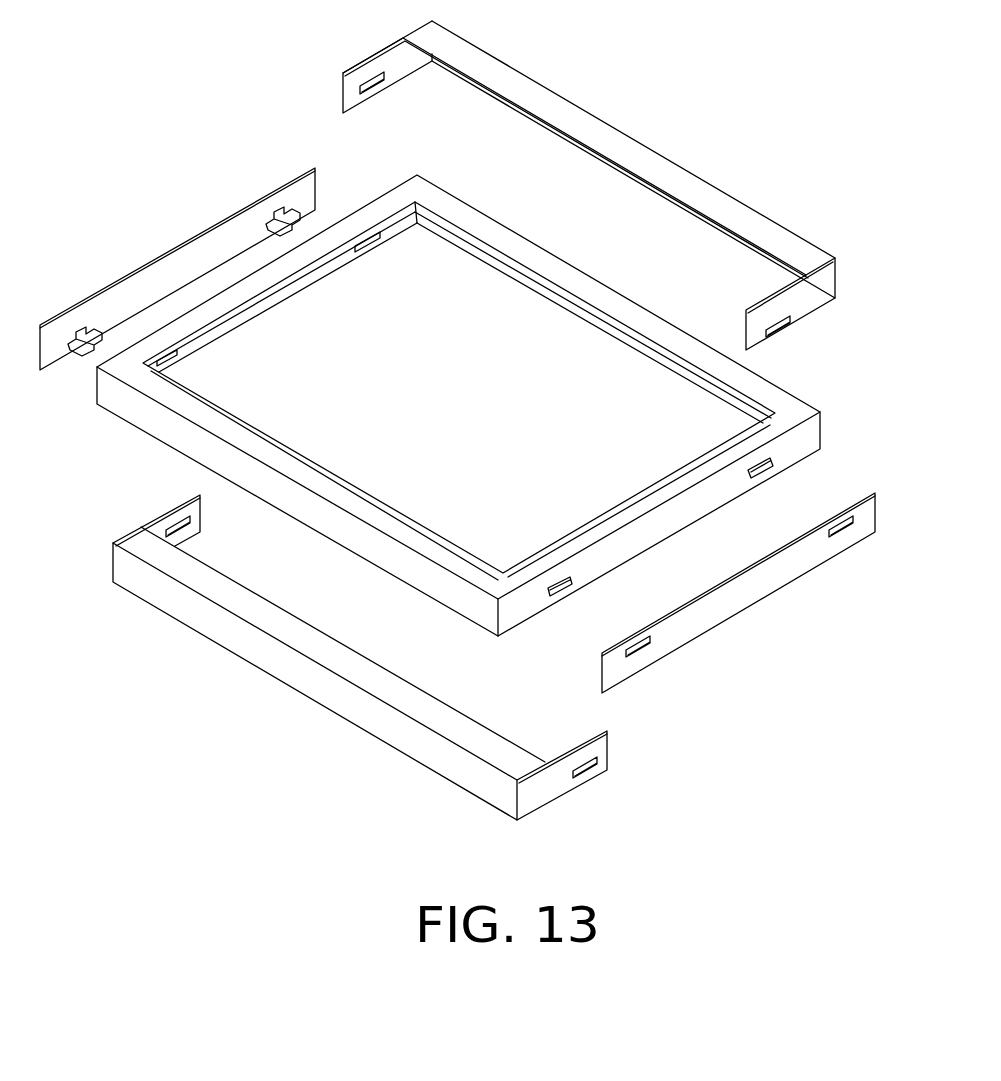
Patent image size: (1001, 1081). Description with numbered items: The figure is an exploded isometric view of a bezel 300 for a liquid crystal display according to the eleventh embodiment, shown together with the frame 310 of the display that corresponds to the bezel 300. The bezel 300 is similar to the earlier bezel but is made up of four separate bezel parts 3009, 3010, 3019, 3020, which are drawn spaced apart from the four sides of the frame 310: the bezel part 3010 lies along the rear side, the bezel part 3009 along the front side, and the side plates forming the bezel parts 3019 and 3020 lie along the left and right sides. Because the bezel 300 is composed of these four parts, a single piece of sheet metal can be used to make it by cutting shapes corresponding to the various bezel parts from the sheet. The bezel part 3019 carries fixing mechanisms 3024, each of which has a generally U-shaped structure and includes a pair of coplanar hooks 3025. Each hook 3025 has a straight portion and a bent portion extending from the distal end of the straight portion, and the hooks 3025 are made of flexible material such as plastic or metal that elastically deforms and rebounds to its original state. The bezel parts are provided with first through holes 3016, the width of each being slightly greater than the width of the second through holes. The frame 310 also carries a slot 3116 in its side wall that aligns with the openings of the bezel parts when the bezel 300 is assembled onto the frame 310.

The bezel 300 is at (451, 447).
The frame 310 is at (482, 405).
The bezel part 3009 is at (379, 684).
The bezel part 3010 is at (663, 173).
The first through hole 3016 is at (587, 777).
The bezel part 3019 is at (171, 250).
The bezel part 3020 is at (755, 588).
The fixing mechanism 3024 is at (75, 334).
The hook 3025 is at (277, 214).
The slot of frame 3116 is at (769, 471).